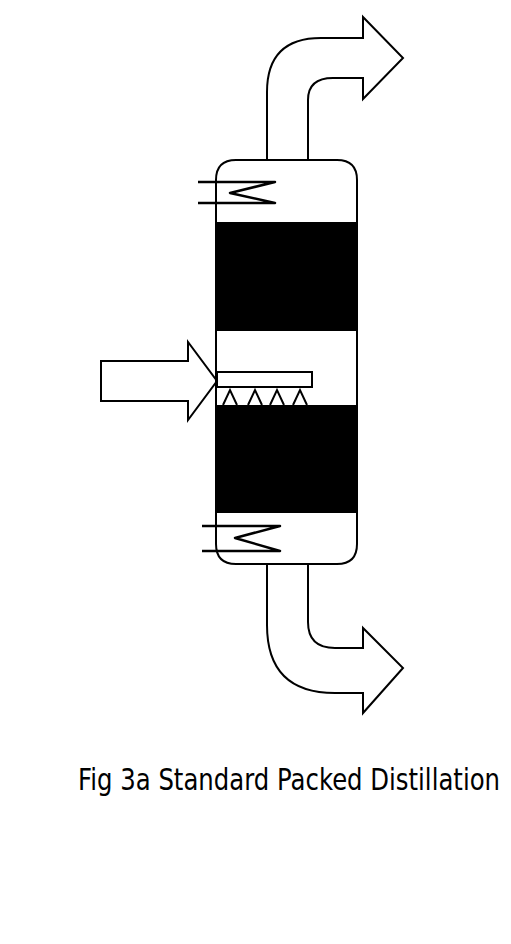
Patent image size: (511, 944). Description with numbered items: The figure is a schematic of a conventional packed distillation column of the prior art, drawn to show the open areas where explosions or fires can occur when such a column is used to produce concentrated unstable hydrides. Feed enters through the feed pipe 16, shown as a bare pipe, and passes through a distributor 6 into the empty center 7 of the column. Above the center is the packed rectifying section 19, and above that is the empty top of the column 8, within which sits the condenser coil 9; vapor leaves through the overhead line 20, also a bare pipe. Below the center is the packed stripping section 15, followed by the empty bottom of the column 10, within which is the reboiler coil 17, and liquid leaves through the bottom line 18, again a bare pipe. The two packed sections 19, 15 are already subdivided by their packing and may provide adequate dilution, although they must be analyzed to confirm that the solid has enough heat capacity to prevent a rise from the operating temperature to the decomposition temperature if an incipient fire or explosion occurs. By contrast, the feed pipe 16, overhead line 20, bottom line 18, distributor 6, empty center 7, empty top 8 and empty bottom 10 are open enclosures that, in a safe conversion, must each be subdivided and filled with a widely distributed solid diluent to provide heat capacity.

The distributor 6 is at (264, 375).
The empty center of the column 7 is at (286, 368).
The empty top of the column 8 is at (286, 191).
The condenser coil 9 is at (214, 186).
The empty bottom of the column 10 is at (286, 538).
The packed stripping section 15 is at (357, 459).
The feed pipe 16 is at (134, 381).
The reboiler coil 17 is at (217, 533).
The bottom line 18 is at (367, 638).
The packed rectifying section 19 is at (357, 264).
The overhead line 20 is at (367, 88).